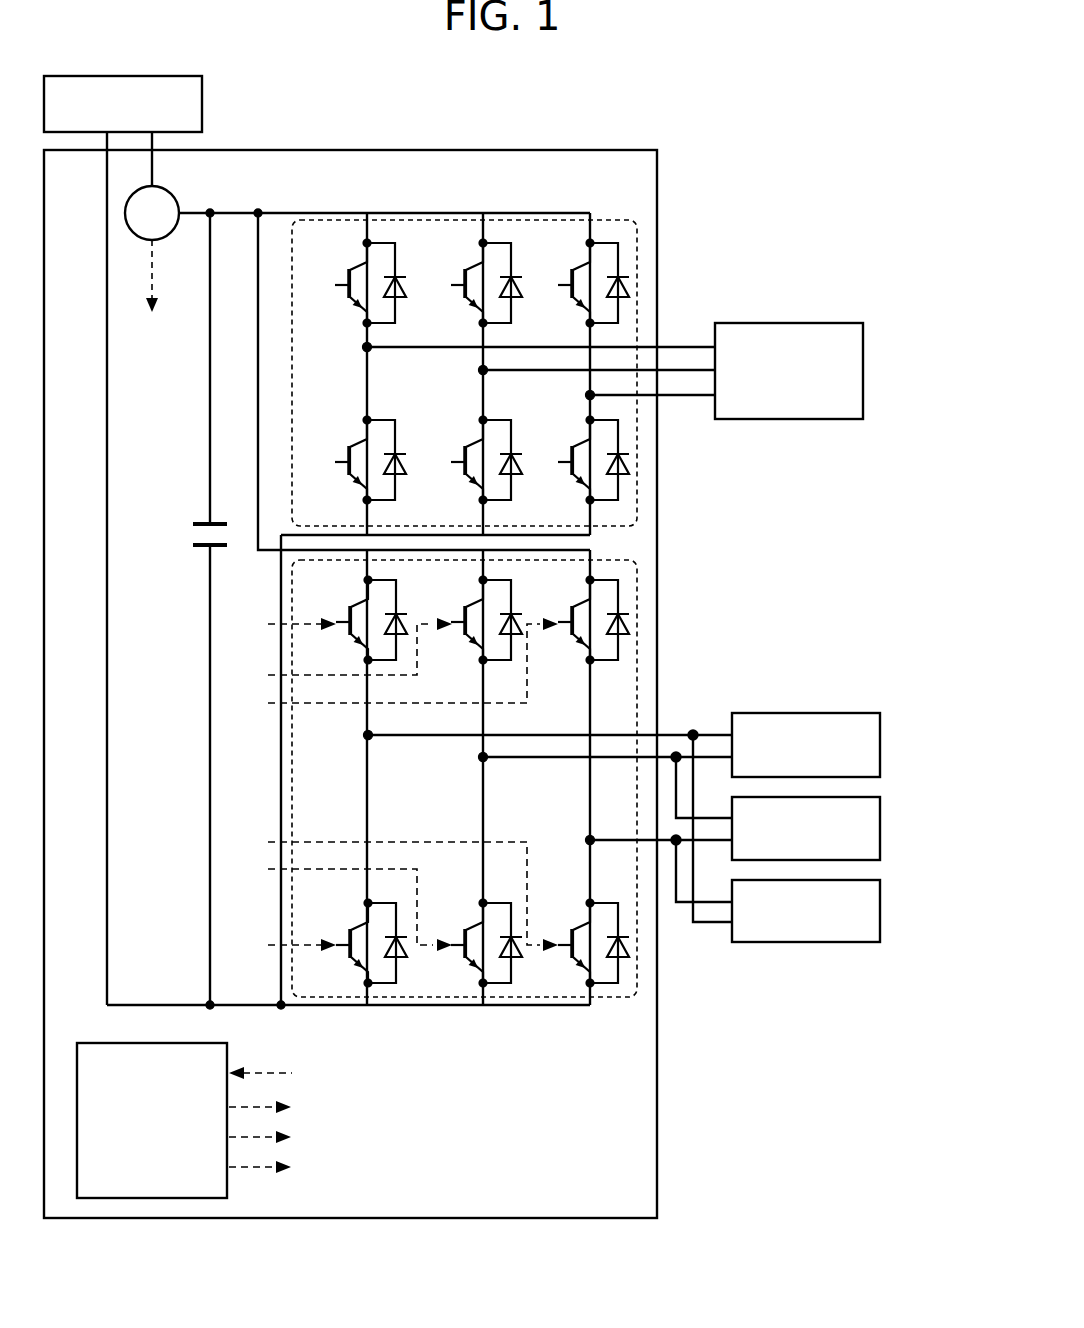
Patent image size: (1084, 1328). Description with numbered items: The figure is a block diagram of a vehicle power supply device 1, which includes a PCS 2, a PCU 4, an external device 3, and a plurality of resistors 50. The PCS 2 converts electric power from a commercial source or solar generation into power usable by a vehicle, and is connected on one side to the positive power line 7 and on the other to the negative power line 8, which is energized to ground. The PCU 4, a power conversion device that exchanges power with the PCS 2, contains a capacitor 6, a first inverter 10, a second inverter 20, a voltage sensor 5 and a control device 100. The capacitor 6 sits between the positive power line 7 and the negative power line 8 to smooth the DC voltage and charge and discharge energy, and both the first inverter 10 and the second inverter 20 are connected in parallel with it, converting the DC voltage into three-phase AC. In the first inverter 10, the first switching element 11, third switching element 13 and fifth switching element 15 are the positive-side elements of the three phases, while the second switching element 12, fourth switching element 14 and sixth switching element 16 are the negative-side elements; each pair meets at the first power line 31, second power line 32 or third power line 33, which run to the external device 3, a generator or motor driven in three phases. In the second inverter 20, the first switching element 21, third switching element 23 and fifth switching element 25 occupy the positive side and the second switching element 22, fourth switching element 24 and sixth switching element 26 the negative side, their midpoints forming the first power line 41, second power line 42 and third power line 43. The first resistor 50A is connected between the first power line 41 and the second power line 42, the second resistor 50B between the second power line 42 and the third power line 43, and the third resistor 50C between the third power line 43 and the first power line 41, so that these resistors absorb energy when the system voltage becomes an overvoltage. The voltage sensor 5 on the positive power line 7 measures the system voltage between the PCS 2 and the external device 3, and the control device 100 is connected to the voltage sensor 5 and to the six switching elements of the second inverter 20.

The vehicle power supply device 1 is at (692, 1257).
The PCS 2 is at (202, 92).
The external device 3 is at (863, 333).
The PCU 4 is at (657, 193).
The voltage sensor 5 is at (170, 194).
The capacitor 6 is at (203, 520).
The positive power line 7 is at (306, 213).
The negative power line 8 is at (148, 1004).
The first inverter 10 is at (637, 242).
The first switching element 11 is at (351, 263).
The second switching element 12 is at (353, 486).
The third switching element 13 is at (467, 263).
The fourth switching element 14 is at (469, 486).
The fifth switching element 15 is at (575, 263).
The sixth switching element 16 is at (576, 486).
The second inverter 20 is at (637, 580).
The first switching element 21 is at (353, 606).
The second switching element 22 is at (354, 923).
The third switching element 23 is at (468, 606).
The fourth switching element 24 is at (469, 923).
The fifth switching element 25 is at (575, 606).
The sixth switching element 26 is at (576, 923).
The first power line 31 is at (366, 368).
The second power line 32 is at (482, 384).
The third power line 33 is at (589, 406).
The first power line 41 is at (368, 766).
The second power line 42 is at (482, 791).
The third power line 43 is at (589, 813).
The plurality of resistors 50 is at (807, 712).
The first resistor 50A is at (880, 738).
The second resistor 50B is at (880, 821).
The third resistor 50C is at (880, 903).
The control device 100 is at (227, 1058).